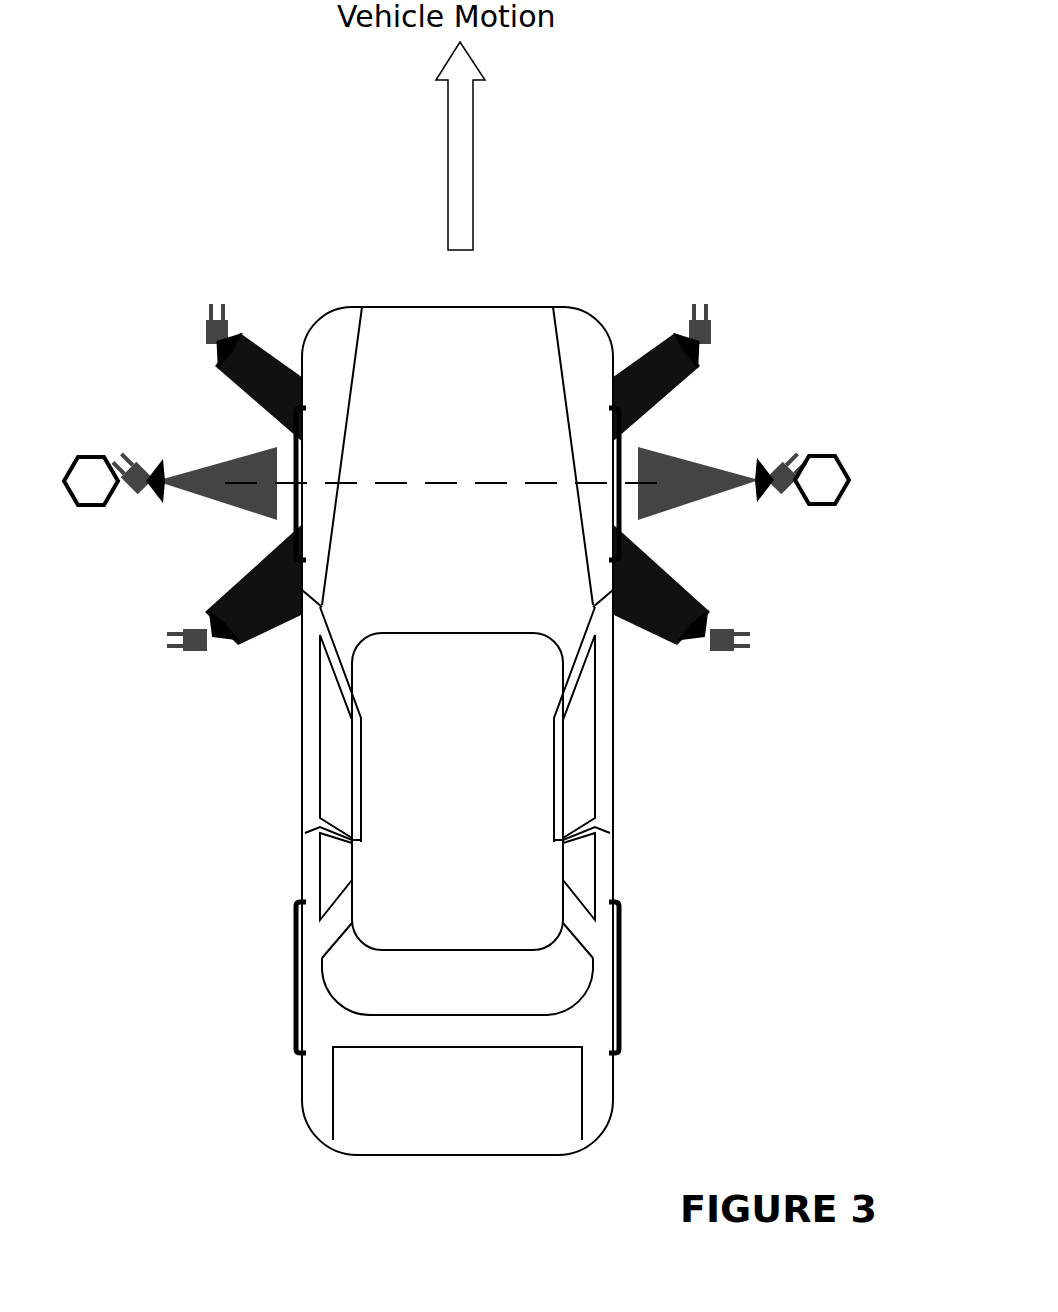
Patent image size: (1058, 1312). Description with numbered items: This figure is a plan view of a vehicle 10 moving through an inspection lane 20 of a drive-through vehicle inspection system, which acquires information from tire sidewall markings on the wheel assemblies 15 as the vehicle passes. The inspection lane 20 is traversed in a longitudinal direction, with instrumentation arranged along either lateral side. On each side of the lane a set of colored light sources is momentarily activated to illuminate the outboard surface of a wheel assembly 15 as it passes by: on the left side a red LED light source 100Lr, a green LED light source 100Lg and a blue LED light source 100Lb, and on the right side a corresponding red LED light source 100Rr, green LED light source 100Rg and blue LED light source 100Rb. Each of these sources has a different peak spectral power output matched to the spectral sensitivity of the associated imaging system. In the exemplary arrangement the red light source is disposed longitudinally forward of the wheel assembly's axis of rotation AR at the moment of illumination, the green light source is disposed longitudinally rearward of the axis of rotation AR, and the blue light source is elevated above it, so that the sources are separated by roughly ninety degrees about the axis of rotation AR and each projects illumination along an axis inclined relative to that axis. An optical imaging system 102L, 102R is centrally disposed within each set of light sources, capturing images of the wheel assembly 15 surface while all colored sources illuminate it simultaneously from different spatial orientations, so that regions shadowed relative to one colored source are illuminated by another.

The vehicle 10 is at (457, 731).
The wheel assembly 15 is at (288, 452).
The inspection lane 20 is at (276, 140).
The axis of rotation AR is at (476, 472).
The red LED light source 100Lr is at (193, 305).
The green LED light source 100Lg is at (142, 445).
The blue LED light source 100Lb is at (198, 665).
The red LED light source 100Rr is at (723, 310).
The green LED light source 100Rg is at (786, 446).
The blue LED light source 100Rb is at (724, 642).
The optical imaging system 102L is at (102, 512).
The optical imaging system 102R is at (811, 518).